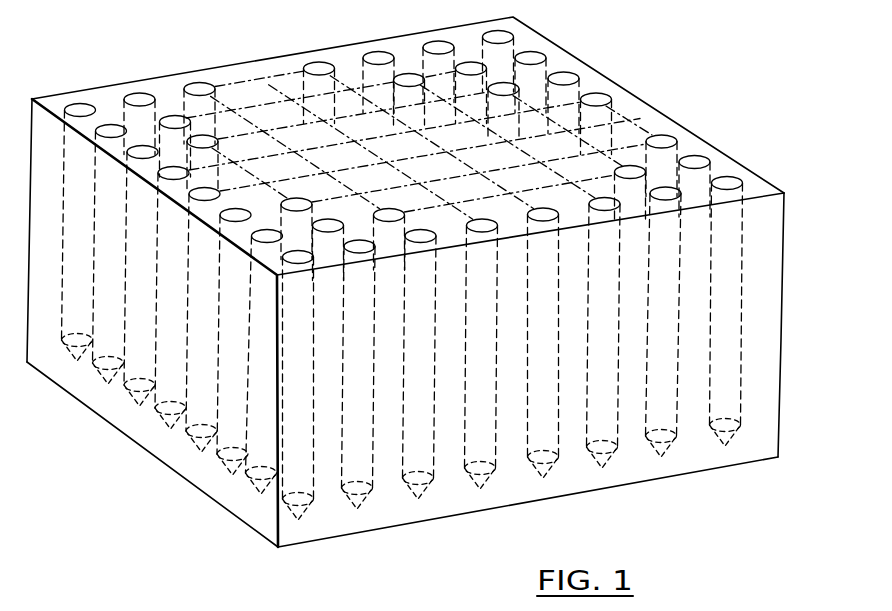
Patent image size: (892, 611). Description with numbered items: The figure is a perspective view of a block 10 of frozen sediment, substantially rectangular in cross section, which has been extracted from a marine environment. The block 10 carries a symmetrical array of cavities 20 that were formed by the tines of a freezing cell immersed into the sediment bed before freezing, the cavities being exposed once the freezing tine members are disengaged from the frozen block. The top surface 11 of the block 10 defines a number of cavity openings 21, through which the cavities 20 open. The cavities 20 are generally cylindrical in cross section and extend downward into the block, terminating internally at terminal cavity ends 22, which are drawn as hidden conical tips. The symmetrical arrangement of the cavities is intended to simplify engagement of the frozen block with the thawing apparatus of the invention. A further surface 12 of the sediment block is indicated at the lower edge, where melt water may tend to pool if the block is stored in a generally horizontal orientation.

The block 10 is at (783, 346).
The top surface 11 is at (247, 93).
The top surface of the sediment block 12 is at (417, 524).
The cavities 20 is at (730, 183).
The cavity openings 21 is at (536, 54).
The terminal cavity ends 22 is at (728, 432).